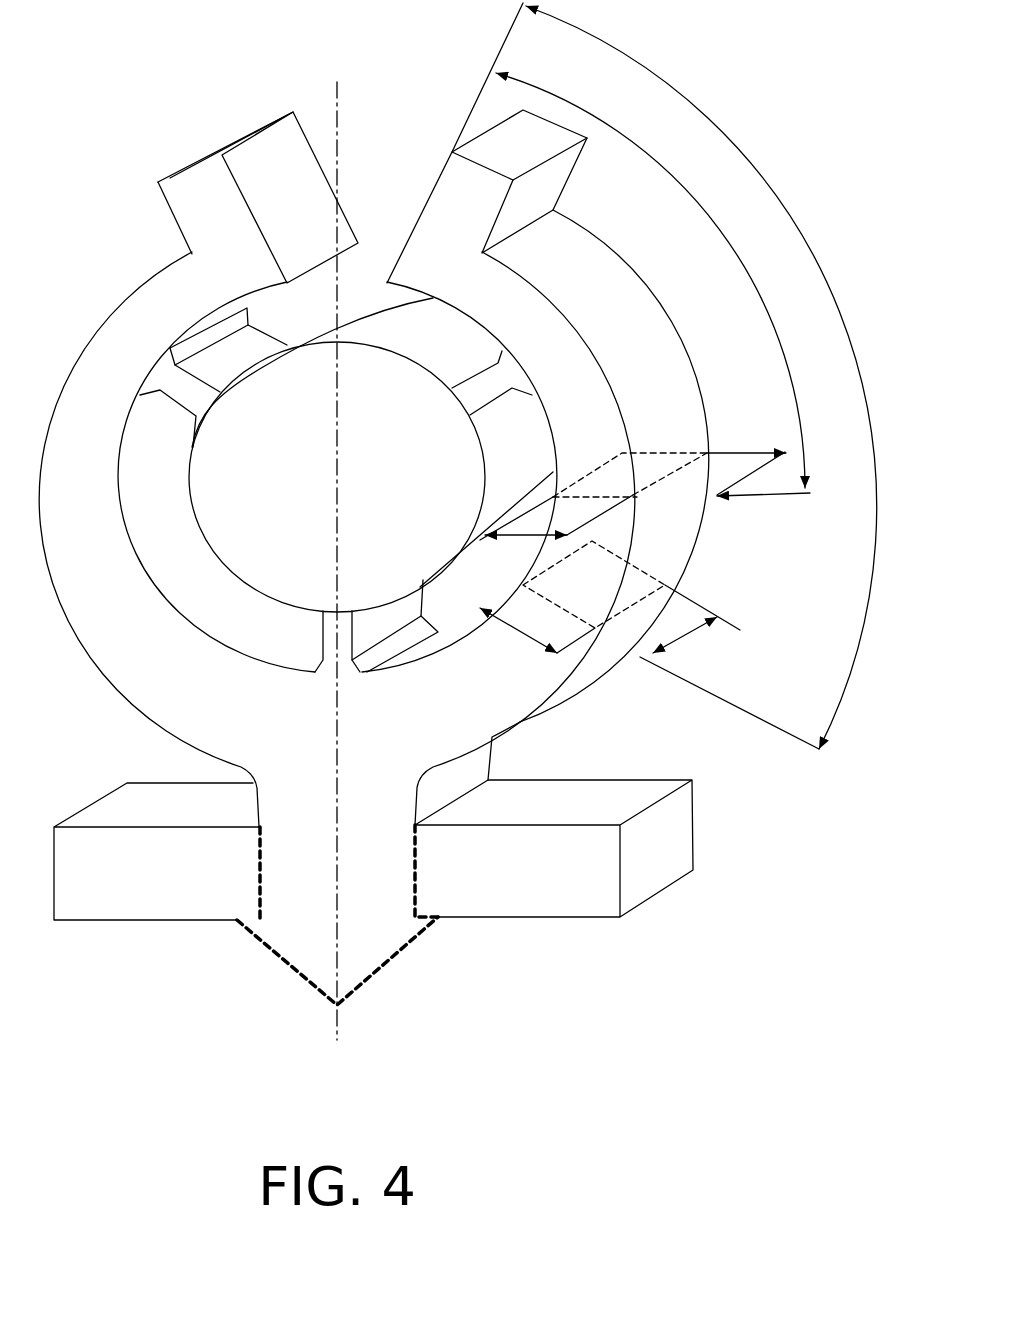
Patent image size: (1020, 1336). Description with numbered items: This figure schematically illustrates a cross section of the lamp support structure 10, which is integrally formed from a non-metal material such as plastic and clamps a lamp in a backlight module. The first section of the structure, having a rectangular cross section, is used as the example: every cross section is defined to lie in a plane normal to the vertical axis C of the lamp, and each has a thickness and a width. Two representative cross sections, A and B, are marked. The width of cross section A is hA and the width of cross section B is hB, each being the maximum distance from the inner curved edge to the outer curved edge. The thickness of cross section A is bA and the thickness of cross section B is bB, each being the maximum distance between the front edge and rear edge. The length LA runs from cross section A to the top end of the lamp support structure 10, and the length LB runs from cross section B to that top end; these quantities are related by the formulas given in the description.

The lamp support structure 10 is at (322, 1097).
The vertical axis C is at (337, 548).
The length from cross section A to top end LA is at (628, 245).
The length from cross section B to top end LB is at (703, 377).
The thickness of cross section A bA is at (750, 468).
The width of cross section A hA is at (520, 537).
The thickness of cross section B bB is at (672, 640).
The width of cross section B hB is at (518, 633).